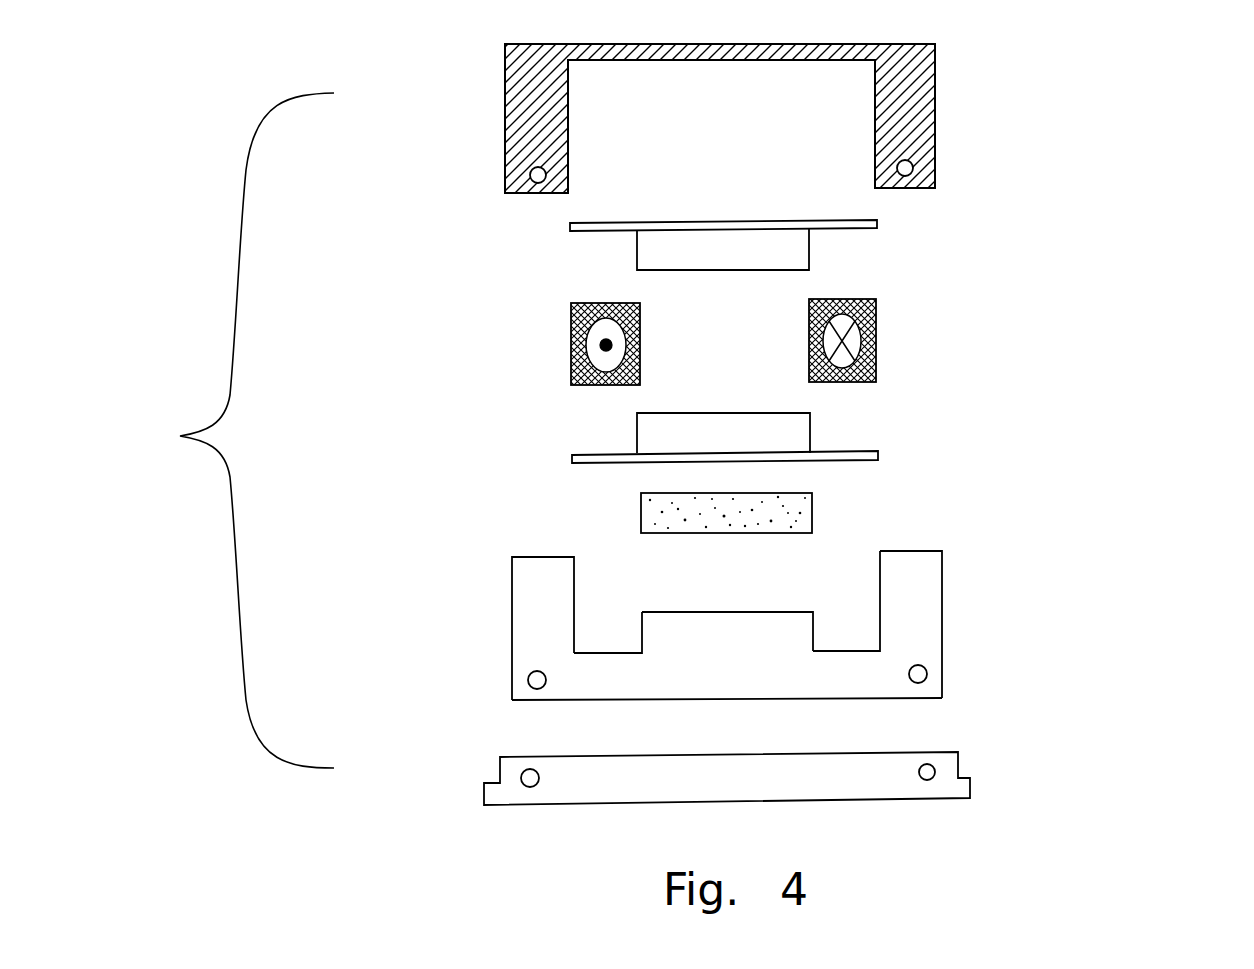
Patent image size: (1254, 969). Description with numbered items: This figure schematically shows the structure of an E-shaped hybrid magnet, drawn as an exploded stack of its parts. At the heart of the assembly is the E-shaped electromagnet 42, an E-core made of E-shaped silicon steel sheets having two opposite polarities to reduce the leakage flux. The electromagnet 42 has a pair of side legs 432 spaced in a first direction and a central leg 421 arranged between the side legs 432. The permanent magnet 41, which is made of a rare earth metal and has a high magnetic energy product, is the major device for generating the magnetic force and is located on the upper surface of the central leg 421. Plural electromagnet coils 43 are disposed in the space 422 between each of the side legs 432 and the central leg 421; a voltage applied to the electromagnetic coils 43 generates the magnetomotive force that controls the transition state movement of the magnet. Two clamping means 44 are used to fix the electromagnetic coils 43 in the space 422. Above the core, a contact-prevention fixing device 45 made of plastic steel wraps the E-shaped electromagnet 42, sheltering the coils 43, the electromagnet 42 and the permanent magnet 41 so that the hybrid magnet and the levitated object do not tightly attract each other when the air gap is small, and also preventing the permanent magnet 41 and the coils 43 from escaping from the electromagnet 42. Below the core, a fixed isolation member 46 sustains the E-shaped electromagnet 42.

The permanent magnet 41 is at (817, 513).
The E-shaped electromagnet 42 is at (920, 622).
The electromagnet coils 43 is at (803, 333).
The clamping means 44 is at (888, 451).
The contact-prevention fixing device 45 is at (902, 119).
The fixed isolation member 46 is at (945, 772).
The central leg 421 is at (725, 630).
The space 422 is at (607, 633).
The side legs 432 is at (528, 608).